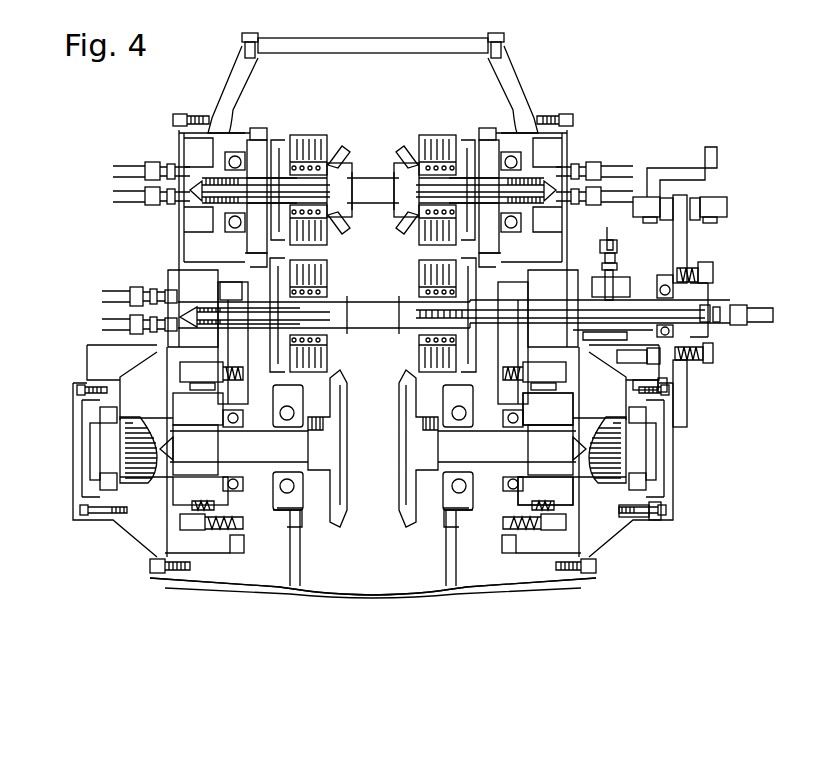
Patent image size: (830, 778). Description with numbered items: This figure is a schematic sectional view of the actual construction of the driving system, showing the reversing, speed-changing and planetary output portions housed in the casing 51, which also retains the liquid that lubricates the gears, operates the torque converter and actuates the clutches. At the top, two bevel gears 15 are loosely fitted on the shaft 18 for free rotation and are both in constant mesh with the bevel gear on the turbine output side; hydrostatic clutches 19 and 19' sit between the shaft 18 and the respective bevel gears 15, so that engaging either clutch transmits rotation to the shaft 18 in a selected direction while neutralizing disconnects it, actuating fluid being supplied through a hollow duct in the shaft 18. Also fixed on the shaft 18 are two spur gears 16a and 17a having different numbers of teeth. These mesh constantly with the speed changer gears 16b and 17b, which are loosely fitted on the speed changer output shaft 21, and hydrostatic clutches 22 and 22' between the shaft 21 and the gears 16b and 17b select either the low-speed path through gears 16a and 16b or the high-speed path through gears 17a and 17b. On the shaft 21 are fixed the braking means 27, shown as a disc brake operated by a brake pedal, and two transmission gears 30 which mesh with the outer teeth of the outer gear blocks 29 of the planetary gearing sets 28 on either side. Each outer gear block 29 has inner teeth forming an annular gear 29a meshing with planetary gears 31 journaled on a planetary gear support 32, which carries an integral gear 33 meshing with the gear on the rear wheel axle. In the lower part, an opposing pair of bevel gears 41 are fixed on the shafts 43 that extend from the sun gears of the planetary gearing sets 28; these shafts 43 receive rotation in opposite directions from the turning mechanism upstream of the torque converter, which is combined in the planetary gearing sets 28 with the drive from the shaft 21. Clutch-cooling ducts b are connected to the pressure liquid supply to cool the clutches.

The bevel gears 15 is at (415, 150).
The spur gear 16a is at (494, 138).
The speed changer gear 16b is at (428, 252).
The spur gear 17a is at (250, 128).
The speed changer gear 17b is at (245, 265).
The shaft 18 is at (370, 180).
The hydrostatic clutch 19 is at (299, 155).
The hydrostatic clutch 19' is at (447, 155).
The speed changer output shaft 21 is at (368, 322).
The hydrostatic clutch 22 is at (414, 314).
The hydrostatic clutch 22' is at (330, 328).
The braking means 27 is at (752, 200).
The planetary gearing set 28 is at (211, 562).
The outer gear block 29 is at (236, 553).
The annular gear 29a is at (192, 506).
The transmission gear 30 is at (228, 289).
The planetary gears 31 is at (585, 490).
The planetary gear support 32 is at (556, 396).
The gear 33 is at (622, 517).
The bevel gears 41 is at (395, 528).
The shafts 43 is at (260, 453).
The casing 51 is at (322, 596).
The clutch-cooling ducts b is at (612, 228).